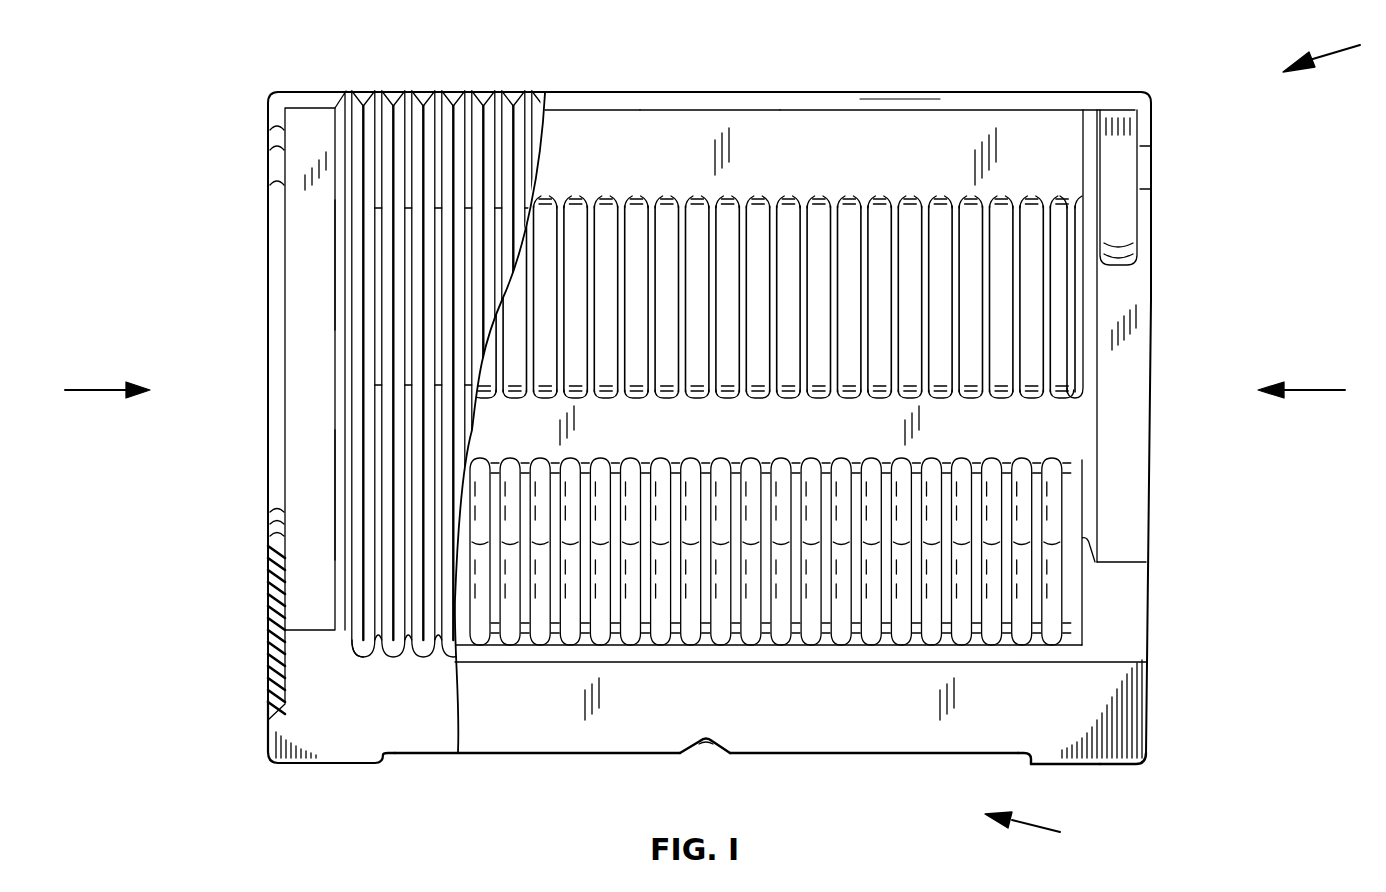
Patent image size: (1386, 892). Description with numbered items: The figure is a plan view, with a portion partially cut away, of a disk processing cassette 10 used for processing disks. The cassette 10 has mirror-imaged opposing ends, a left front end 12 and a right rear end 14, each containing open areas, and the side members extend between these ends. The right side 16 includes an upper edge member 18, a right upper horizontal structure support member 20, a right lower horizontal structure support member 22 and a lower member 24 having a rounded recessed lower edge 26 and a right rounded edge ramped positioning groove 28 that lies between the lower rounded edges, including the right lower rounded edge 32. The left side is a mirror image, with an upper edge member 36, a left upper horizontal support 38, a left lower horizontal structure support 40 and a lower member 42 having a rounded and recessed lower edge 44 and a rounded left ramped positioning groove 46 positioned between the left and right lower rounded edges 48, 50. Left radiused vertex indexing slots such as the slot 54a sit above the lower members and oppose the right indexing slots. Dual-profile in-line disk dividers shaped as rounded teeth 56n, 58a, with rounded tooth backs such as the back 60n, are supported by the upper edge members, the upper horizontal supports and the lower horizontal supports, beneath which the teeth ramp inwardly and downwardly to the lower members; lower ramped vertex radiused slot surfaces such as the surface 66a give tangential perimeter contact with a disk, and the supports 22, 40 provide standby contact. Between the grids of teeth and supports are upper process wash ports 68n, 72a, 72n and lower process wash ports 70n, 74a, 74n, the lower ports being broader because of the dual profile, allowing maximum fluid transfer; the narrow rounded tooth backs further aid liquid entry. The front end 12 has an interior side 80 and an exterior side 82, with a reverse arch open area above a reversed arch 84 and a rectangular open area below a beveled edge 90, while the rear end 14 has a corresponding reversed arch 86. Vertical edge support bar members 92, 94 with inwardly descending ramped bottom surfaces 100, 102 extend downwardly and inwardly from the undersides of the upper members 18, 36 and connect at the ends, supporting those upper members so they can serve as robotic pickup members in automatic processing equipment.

The disk processing cassette 10 is at (1334, 53).
The left front end 12 is at (89, 391).
The right rear end 14 is at (1317, 391).
The right side 16 is at (1042, 833).
The upper edge member 18 is at (865, 97).
The right upper horizontal structure support member 20 is at (668, 127).
The right lower horizontal structure support member 22 is at (1090, 415).
The lower member 24 is at (725, 718).
The rounded recessed lower edge 26 is at (560, 753).
The right rounded edge ramped positioning groove 28 is at (712, 745).
The right lower rounded edge 32 is at (1060, 764).
The upper edge member 36 is at (793, 100).
The left upper horizontal support 38 is at (612, 125).
The left lower horizontal structure support 40 is at (348, 393).
The lower member 42 is at (390, 717).
The rounded and recessed lower edge 44 is at (425, 763).
The rounded left ramped positioning groove 46 is at (702, 752).
The left lower rounded edge 48 is at (323, 764).
The right lower rounded edge 50 is at (1098, 766).
The left radiused vertex indexing slot 54a is at (352, 91).
The rounded tooth 56n is at (1053, 355).
The rounded tooth 58a is at (372, 91).
The rounded tooth back 60n is at (1045, 220).
The lower ramped vertex radiused slot surface 66a is at (348, 658).
The upper process wash port 68n is at (1070, 293).
The lower process wash port 70n is at (1068, 507).
The upper process wash port 72a is at (350, 270).
The upper process wash port 72n is at (1068, 373).
The lower process wash port 74a is at (348, 492).
The lower process wash port 74n is at (1068, 527).
The interior side 80 is at (286, 322).
The exterior side 82 is at (268, 318).
The rounded edge reversed arch 84 is at (268, 540).
The rounded edge reversed arch 86 is at (1125, 478).
The beveled edge 90 is at (280, 715).
The vertical edge support bar member 92 is at (1155, 144).
The vertical edge support bar member 94 is at (1140, 193).
The inwardly descending ramped bottom surface 100 is at (1152, 246).
The inwardly descending ramped bottom surface 102 is at (1140, 266).